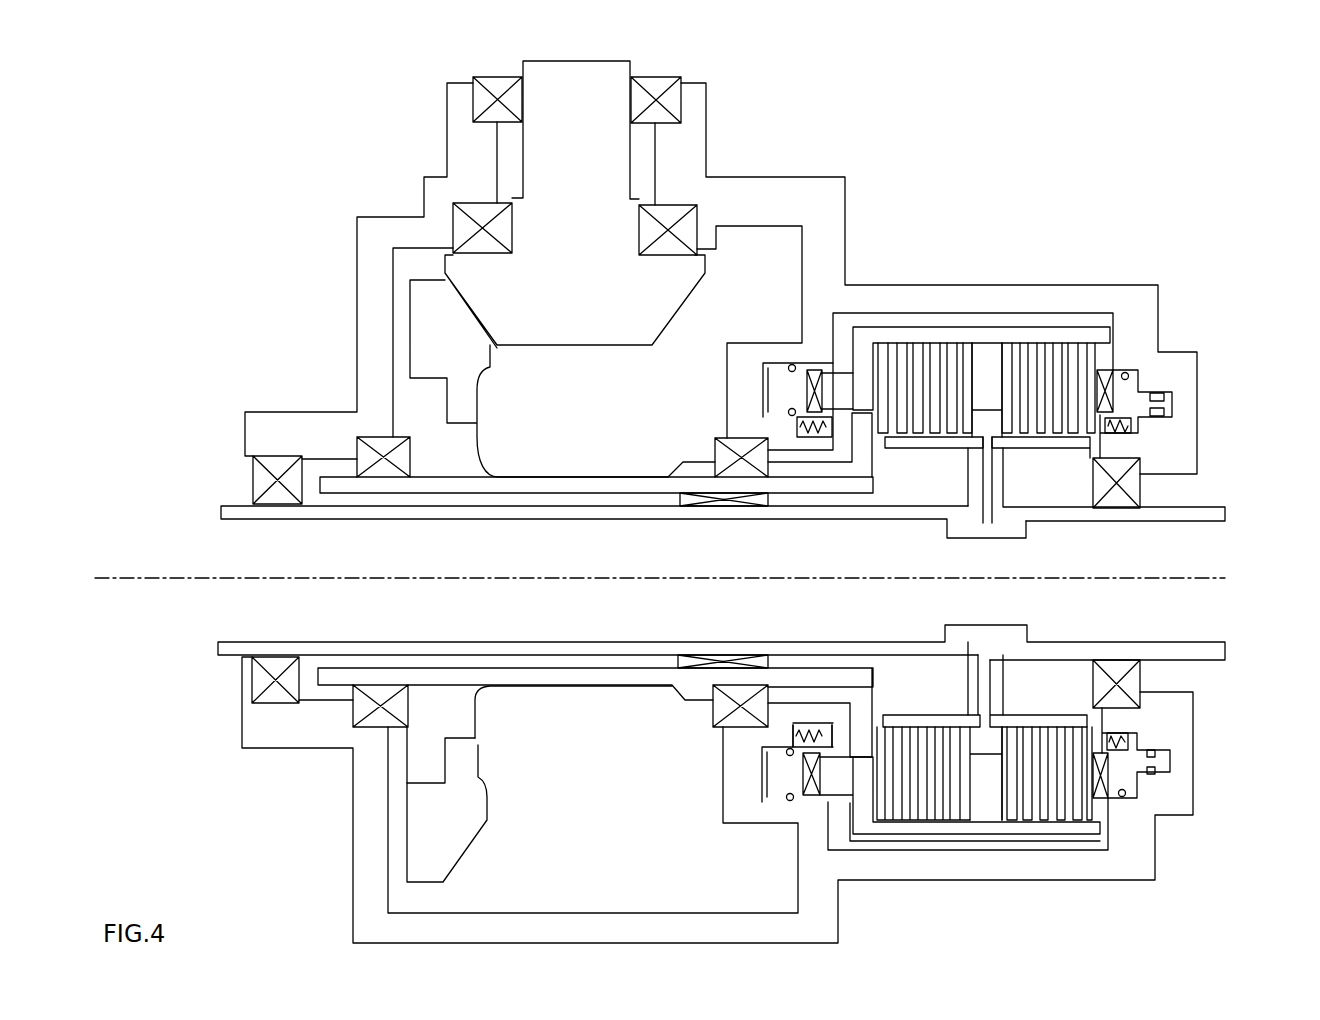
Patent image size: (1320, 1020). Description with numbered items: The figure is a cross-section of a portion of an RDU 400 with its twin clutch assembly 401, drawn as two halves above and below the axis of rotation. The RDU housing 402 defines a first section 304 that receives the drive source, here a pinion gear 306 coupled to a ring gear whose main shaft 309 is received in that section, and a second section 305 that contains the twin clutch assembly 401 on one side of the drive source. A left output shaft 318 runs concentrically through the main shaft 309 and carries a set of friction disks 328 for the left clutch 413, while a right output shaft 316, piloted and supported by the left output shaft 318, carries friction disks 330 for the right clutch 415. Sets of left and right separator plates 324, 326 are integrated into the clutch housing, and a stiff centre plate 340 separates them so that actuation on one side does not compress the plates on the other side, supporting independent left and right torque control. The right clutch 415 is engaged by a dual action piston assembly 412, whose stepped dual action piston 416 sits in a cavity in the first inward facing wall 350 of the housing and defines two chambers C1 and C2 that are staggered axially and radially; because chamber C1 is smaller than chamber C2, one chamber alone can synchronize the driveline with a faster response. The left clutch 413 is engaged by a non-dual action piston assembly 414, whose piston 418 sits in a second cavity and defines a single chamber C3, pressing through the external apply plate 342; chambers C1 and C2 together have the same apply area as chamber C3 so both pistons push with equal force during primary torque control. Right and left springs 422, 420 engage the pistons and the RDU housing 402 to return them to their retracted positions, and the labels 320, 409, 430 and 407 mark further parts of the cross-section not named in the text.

The second compartment or section 305 is at (612, 72).
The RDU housing 402 is at (692, 142).
The first compartment or section 304 is at (443, 260).
The pinion gear 306 is at (427, 323).
The main shaft 309 is at (332, 483).
The left output shaft 318 is at (222, 510).
The right output shaft 316 is at (1200, 520).
The external apply plate 342 is at (863, 383).
The centre plate 340 is at (983, 357).
The left separator plates 324 is at (972, 390).
The twin clutch assembly 401 is at (1065, 327).
The first inward facing wall 350 is at (1100, 363).
The right separator plates 326 is at (1108, 374).
The chamber C1 is at (1143, 378).
The dual action piston assembly 412 is at (1170, 383).
The chamber C2 is at (1172, 405).
The dual action piston 416 is at (1138, 405).
The non-dual action left piston assembly 414 is at (783, 355).
The chamber C3 is at (763, 371).
The piston 418 is at (787, 393).
The web 320 is at (992, 650).
The right spring 422 is at (1107, 735).
The friction disks 330 is at (1097, 805).
The right clutch 415 is at (1077, 848).
The friction disks 328 is at (967, 805).
The hub 409 is at (994, 900).
The left clutch 413 is at (925, 847).
The bearing 430 is at (812, 797).
The left spring 420 is at (795, 733).
The RDU 400 is at (230, 809).
The housing 407 is at (346, 878).